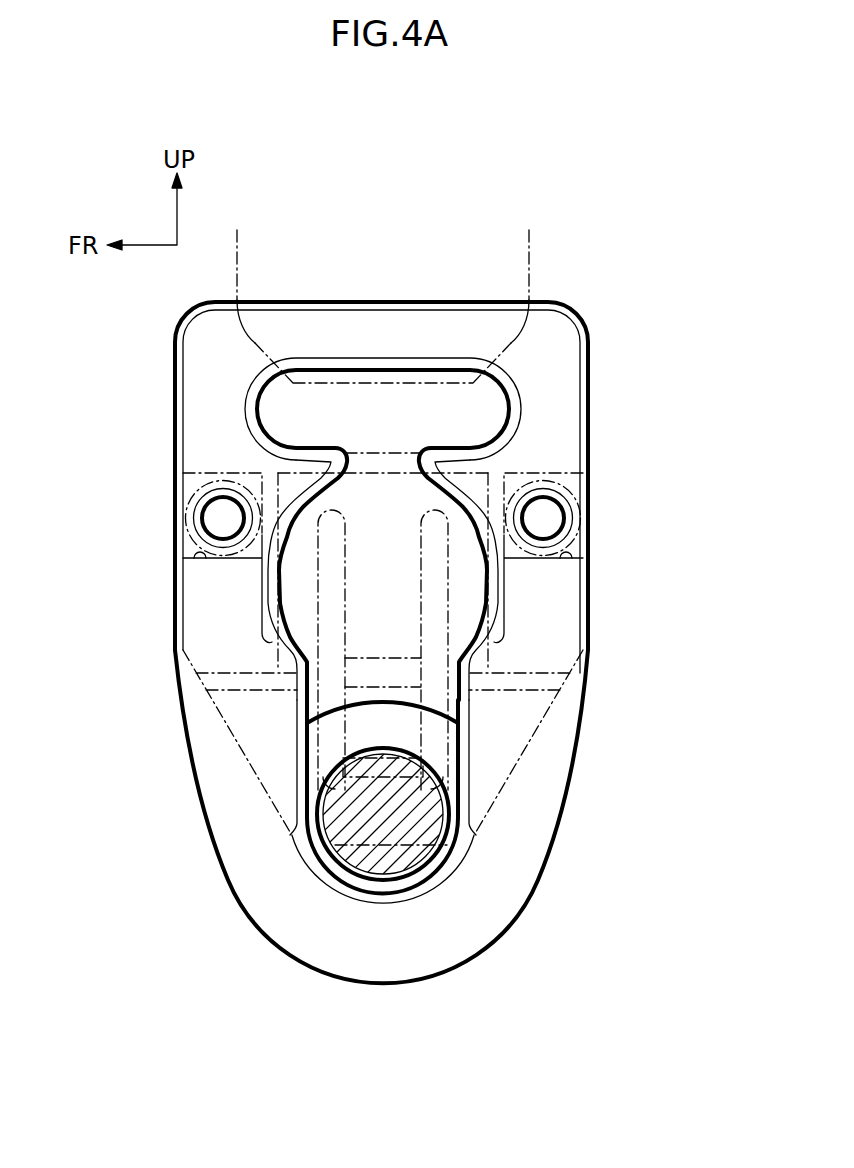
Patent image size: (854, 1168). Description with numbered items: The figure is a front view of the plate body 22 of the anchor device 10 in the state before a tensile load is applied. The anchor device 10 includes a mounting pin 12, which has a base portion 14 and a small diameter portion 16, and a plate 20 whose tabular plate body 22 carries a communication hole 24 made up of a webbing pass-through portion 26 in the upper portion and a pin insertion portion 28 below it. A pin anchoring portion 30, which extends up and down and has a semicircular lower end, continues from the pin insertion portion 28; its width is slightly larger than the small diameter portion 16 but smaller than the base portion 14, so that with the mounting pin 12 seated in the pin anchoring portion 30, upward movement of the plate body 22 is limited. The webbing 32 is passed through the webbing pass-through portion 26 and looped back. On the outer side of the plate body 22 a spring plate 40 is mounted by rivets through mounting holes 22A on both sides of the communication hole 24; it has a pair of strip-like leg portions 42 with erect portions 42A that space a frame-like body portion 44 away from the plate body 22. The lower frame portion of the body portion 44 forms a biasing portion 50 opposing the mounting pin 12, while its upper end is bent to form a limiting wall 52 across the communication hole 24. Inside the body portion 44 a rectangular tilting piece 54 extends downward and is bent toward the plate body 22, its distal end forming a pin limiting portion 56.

The anchor device 10 is at (603, 312).
The mounting pin 12 is at (443, 885).
The base portion 14 is at (437, 737).
The small diameter portion 16 is at (367, 870).
The plate 20 is at (592, 420).
The plate body 22 is at (583, 449).
The mounting holes 22A is at (206, 510).
The communication hole 24 is at (300, 512).
The webbing pass-through portion 26 is at (562, 376).
The pin insertion portion 28 is at (472, 606).
The pin anchoring portion 30 is at (512, 761).
The webbing 32 is at (530, 265).
The spring plate 40 is at (522, 798).
The leg portions 42 is at (196, 576).
The erect portions 42A is at (200, 560).
The body portion 44 is at (290, 740).
The biasing portion 50 is at (307, 860).
The limiting wall 52 is at (360, 453).
The tilting piece 54 is at (469, 642).
The pin limiting portion 56 is at (362, 690).